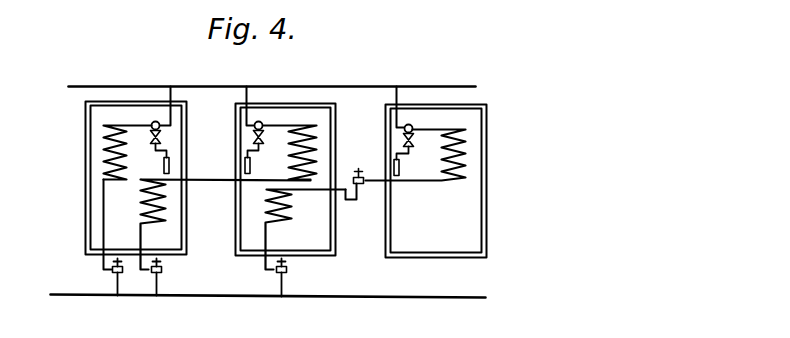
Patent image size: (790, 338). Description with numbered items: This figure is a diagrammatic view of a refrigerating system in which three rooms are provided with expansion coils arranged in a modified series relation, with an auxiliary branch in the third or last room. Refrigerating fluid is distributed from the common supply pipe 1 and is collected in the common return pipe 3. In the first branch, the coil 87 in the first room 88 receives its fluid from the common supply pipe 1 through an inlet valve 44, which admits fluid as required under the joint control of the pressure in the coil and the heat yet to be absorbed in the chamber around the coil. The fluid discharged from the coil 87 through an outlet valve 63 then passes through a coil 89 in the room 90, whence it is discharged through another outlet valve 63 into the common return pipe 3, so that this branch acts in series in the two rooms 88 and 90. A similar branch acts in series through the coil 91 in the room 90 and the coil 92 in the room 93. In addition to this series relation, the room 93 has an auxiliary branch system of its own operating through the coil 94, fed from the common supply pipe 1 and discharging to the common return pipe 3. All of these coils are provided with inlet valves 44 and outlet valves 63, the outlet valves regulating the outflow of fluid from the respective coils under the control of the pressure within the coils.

The common supply pipe 1 is at (441, 84).
The common return pipe 3 is at (404, 296).
The inlet valve 44 is at (158, 126).
The outlet valve 63 is at (158, 267).
The coil 87 is at (456, 150).
The first room 88 is at (473, 219).
The coil 89 is at (284, 218).
The room 90 is at (320, 240).
The coil 91 is at (305, 155).
The coil 92 is at (160, 218).
The room 93 is at (98, 207).
The coil 94 is at (100, 148).